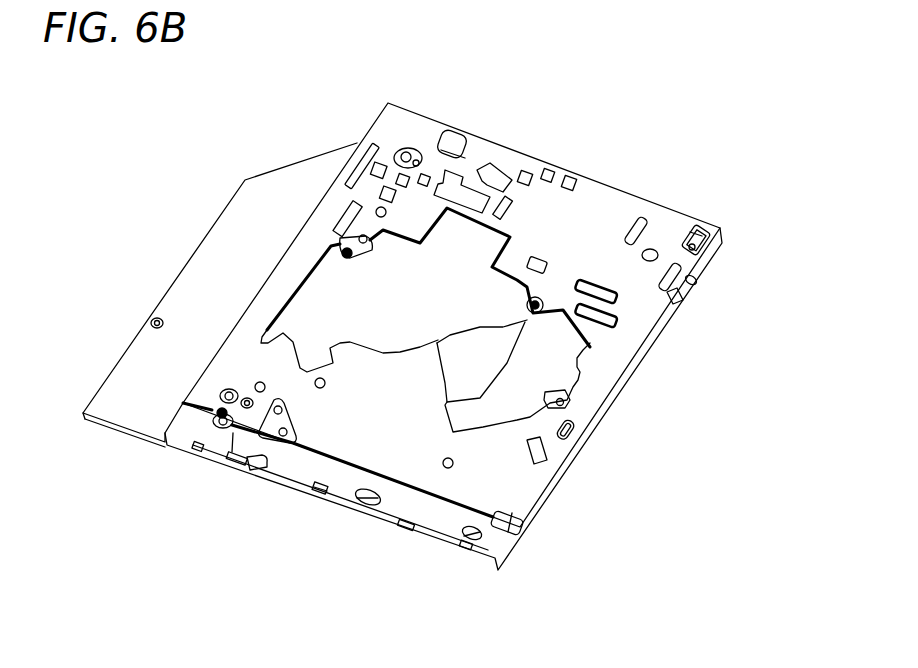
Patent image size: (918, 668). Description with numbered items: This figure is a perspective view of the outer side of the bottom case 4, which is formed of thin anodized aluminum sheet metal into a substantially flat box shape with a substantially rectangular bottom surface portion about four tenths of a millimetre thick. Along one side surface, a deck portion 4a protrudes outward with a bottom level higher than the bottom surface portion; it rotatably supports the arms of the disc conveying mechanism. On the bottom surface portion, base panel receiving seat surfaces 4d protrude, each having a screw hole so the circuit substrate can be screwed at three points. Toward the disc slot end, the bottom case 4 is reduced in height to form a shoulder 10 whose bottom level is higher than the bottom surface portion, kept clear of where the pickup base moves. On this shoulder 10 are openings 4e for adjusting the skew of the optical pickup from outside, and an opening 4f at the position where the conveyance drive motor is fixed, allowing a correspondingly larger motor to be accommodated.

The bottom case 4 is at (273, 94).
The deck portion 4a is at (130, 417).
The base panel receiving seat surface 4d is at (408, 150).
The opening 4e is at (360, 490).
The opening 4f is at (260, 457).
The shoulder 10 is at (415, 512).